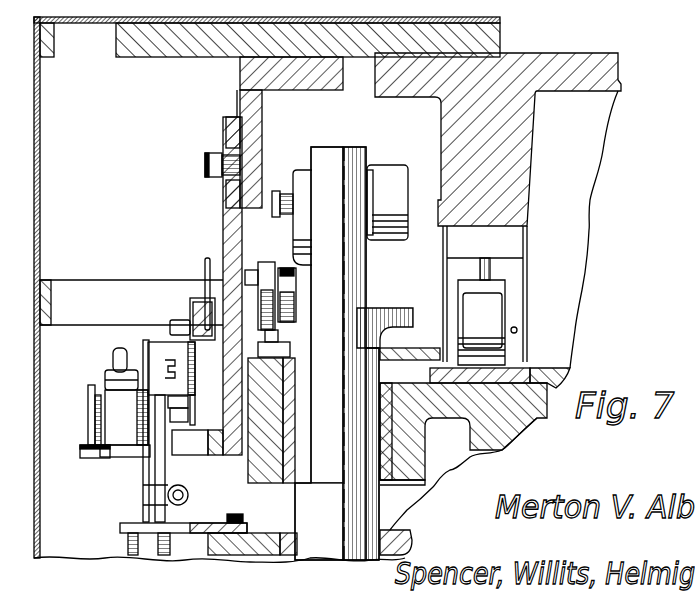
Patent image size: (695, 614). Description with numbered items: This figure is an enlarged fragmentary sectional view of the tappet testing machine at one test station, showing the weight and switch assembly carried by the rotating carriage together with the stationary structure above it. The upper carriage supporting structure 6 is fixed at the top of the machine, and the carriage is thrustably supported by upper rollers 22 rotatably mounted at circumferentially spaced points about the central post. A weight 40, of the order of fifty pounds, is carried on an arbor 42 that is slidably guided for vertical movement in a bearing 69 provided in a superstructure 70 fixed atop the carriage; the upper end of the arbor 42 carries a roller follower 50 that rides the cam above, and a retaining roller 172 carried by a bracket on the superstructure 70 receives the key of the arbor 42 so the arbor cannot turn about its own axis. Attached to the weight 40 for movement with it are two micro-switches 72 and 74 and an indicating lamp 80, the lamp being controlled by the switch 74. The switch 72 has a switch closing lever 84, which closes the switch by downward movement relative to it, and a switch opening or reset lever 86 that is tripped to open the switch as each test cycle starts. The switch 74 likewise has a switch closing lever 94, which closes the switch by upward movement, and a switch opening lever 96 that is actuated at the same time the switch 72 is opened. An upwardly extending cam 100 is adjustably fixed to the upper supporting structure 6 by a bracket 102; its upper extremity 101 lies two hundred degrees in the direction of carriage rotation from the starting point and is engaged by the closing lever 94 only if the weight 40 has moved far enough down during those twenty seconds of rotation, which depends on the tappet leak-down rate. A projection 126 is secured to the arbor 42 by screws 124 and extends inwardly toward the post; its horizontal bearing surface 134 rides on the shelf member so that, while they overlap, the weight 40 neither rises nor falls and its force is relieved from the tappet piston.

The upper carriage supporting structure 6 is at (531, 78).
The upper rollers 22 is at (490, 312).
The weight 40 is at (230, 557).
The arbor 42 is at (322, 540).
The roller follower 50 is at (388, 176).
The bearings 69 is at (388, 485).
The superstructure 70 is at (475, 456).
The micro-switch 72 is at (120, 437).
The micro-switch 74 is at (168, 350).
The indicating lamp 80 is at (135, 492).
The switch closing lever 84 is at (118, 356).
The switch opening or reset lever 86 is at (83, 386).
The switch closing lever 94 is at (190, 402).
The switch opening lever 96 is at (205, 265).
The upwardly extending cam 100 is at (197, 445).
The upper extremity of cam 101 is at (190, 422).
The bracket 102 is at (225, 212).
The screws 124 is at (270, 271).
The projection 126 is at (380, 312).
The bearing surface 134 is at (398, 330).
The retaining roller 172 is at (289, 281).